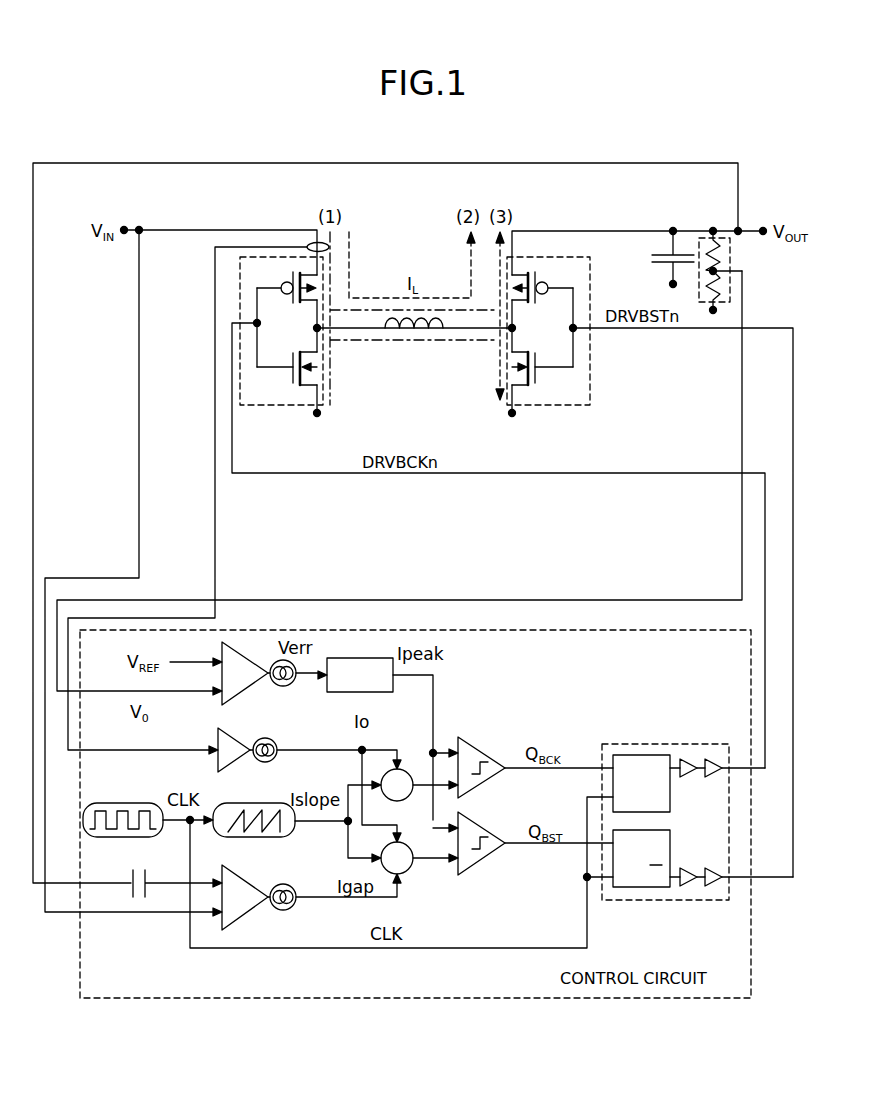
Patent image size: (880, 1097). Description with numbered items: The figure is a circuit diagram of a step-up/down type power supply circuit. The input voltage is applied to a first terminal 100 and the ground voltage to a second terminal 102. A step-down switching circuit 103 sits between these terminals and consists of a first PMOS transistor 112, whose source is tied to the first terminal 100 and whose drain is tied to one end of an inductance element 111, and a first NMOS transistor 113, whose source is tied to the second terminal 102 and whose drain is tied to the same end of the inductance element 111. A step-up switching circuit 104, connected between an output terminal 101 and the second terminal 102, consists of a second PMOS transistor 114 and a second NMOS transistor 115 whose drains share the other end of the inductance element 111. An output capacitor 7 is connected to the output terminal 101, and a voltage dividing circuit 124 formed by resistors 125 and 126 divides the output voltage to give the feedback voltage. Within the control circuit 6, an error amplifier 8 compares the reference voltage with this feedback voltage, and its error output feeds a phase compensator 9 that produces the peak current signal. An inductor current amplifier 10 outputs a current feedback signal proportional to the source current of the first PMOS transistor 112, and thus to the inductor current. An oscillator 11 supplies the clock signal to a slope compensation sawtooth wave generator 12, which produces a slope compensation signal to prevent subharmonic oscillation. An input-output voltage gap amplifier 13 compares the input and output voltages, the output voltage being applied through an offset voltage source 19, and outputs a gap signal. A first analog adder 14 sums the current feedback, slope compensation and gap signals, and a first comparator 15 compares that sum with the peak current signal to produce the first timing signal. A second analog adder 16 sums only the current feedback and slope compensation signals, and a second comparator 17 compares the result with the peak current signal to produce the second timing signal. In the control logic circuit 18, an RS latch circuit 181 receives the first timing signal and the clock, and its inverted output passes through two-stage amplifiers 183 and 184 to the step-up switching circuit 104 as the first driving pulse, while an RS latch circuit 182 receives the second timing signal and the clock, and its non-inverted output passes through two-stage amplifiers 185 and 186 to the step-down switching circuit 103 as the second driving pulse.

The first terminal 100 is at (124, 226).
The output terminal 101 is at (763, 226).
The second terminal 102 is at (317, 418).
The step-down switching circuit 103 is at (240, 280).
The step-up switching circuit 104 is at (590, 280).
The inductance element 111 is at (436, 318).
The first PMOS transistor 112 is at (293, 272).
The first NMOS transistor 113 is at (293, 385).
The second PMOS transistor 114 is at (537, 272).
The second NMOS transistor 115 is at (539, 388).
The output capacitor 7 is at (660, 253).
The voltage dividing circuit 124 is at (735, 254).
The resistor 125 is at (711, 244).
The resistor 126 is at (727, 287).
The control circuit 6 is at (752, 980).
The error amplifier 8 is at (263, 688).
The phase compensator 9 is at (393, 686).
The inductor current amplifier 10 is at (231, 741).
The oscillator 11 is at (123, 806).
The slope compensation sawtooth wave generator 12 is at (256, 806).
The input-output voltage gap amplifier 13 is at (243, 881).
The first analog adder 14 is at (409, 871).
The first comparator 15 is at (478, 822).
The second analog adder 16 is at (401, 767).
The second comparator 17 is at (468, 740).
The control logic circuit 18 is at (605, 746).
The offset voltage source 19 is at (131, 878).
The RS latch circuit 181 is at (637, 887).
The RS latch circuit 182 is at (641, 755).
The amplifier 183 is at (688, 887).
The amplifier 184 is at (715, 887).
The amplifier 185 is at (688, 759).
The amplifier 186 is at (716, 759).